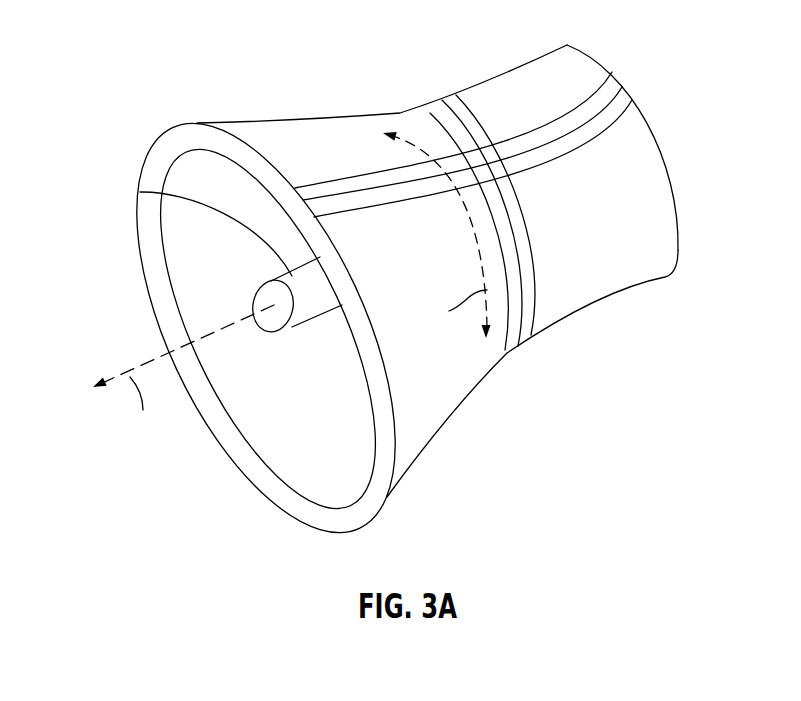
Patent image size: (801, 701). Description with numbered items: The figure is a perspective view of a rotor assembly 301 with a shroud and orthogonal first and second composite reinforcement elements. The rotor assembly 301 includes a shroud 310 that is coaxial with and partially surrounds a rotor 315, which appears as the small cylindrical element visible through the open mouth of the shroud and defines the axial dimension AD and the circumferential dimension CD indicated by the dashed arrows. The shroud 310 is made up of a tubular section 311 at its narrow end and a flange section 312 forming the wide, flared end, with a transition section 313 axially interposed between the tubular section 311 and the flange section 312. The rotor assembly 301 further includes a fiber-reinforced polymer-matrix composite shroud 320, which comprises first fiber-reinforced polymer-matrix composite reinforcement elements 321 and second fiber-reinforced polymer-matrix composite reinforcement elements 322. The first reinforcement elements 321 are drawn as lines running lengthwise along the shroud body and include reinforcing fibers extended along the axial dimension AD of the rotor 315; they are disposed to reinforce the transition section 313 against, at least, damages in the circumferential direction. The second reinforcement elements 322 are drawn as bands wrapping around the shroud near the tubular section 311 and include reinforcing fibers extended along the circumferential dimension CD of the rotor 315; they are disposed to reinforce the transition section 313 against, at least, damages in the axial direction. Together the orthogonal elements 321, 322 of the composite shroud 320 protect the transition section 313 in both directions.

The rotor assembly 301 is at (123, 87).
The shroud 310 is at (417, 438).
The tubular section 311 is at (680, 232).
The flange section 312 is at (320, 518).
The transition section 313 is at (273, 133).
The rotor 315 is at (140, 192).
The fiber-reinforced polymer-matrix composite shroud 320 is at (486, 146).
The first fiber-reinforced polymer-matrix composite reinforcement elements 321 is at (334, 182).
The second fiber-reinforced polymer-matrix composite reinforcement elements 322 is at (533, 253).